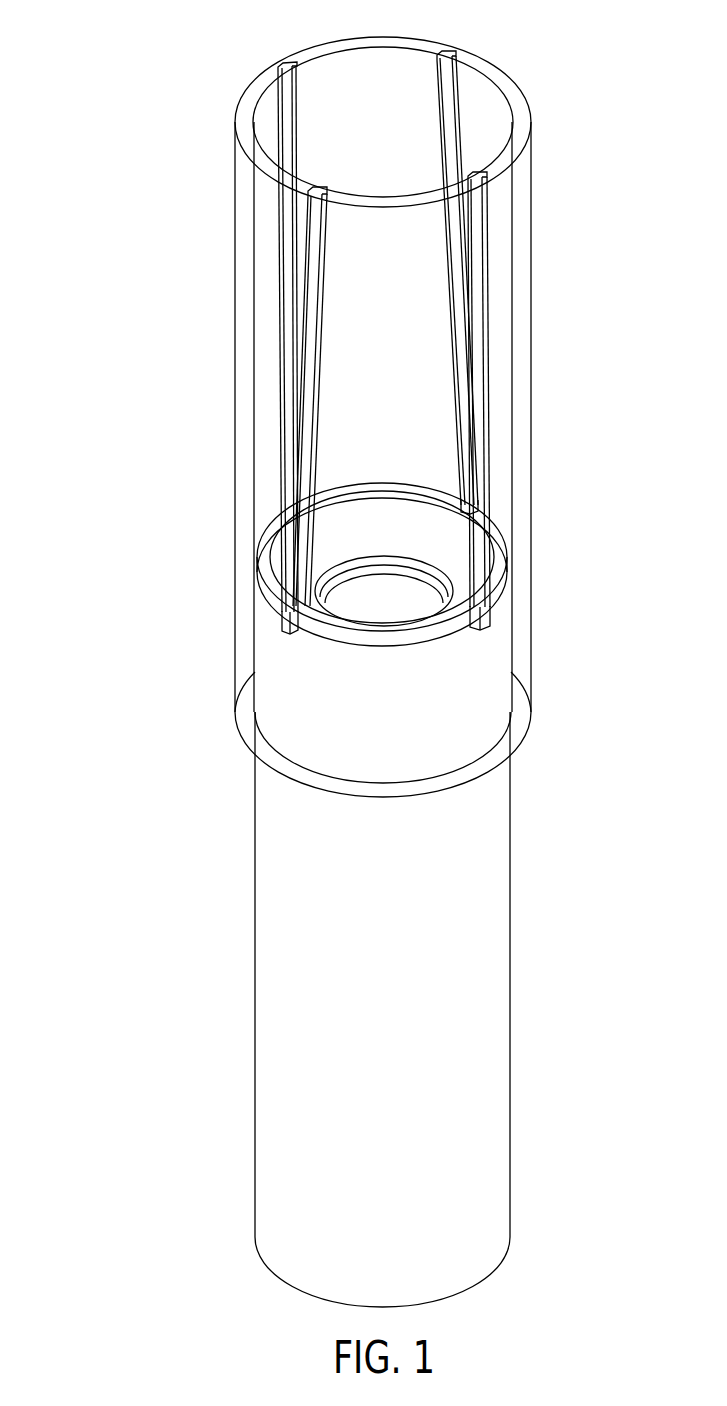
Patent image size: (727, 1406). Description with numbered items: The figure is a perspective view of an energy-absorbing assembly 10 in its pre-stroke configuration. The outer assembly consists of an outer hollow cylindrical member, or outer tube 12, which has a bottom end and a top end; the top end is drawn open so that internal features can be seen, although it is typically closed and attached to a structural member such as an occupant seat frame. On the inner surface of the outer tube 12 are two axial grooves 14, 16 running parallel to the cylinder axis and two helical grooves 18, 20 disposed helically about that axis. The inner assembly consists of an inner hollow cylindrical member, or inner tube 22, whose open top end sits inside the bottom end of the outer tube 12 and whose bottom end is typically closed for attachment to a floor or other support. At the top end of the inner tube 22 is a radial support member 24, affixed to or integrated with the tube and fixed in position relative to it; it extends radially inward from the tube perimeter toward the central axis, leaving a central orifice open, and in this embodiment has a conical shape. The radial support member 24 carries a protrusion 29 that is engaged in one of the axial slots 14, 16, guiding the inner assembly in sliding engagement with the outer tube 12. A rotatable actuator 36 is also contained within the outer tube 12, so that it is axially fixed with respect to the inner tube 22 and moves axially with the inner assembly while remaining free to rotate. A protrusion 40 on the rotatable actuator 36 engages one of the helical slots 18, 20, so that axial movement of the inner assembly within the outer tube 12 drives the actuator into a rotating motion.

The energy-absorbing assembly 10 is at (96, 98).
The outer hollow cylindrical member 12 is at (517, 140).
The axial groove 14 is at (489, 178).
The axial groove 16 is at (286, 66).
The helical groove 18 is at (453, 58).
The helical groove 20 is at (318, 188).
The inner hollow cylindrical member 22 is at (497, 862).
The radial support member 24 is at (500, 593).
The protrusion 29 is at (479, 632).
The rotatable actuator 36 is at (498, 548).
The protrusion 40 is at (287, 622).